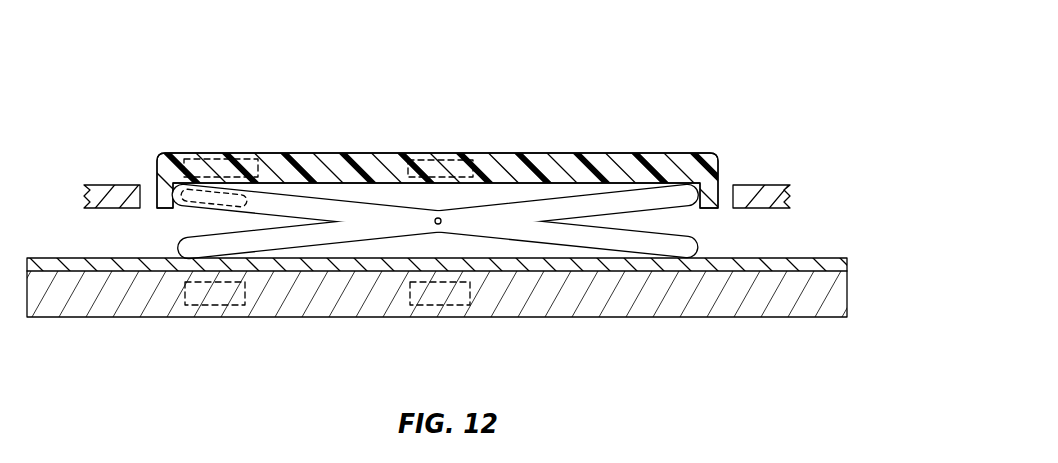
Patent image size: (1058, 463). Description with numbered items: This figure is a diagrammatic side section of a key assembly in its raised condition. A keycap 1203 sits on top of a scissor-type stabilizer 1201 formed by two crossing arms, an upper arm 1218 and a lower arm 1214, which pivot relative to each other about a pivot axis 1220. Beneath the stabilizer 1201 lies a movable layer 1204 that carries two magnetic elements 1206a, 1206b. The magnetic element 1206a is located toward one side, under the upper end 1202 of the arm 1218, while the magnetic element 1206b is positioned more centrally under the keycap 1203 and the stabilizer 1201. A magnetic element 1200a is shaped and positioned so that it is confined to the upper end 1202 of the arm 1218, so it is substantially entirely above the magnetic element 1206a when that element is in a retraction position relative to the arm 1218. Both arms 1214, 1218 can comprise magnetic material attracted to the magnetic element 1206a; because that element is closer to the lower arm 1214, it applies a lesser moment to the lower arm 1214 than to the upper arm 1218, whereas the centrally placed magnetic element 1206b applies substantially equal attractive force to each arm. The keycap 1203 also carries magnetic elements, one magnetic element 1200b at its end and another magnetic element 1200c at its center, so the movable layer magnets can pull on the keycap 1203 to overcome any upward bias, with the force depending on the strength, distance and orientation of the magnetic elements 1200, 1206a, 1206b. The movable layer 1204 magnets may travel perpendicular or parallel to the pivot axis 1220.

The magnetic elements 1200 is at (673, 72).
The magnetic element 1200a is at (268, 158).
The magnetic element 1200b is at (203, 157).
The magnetic element 1200c is at (462, 158).
The stabilizer 1201 is at (480, 205).
The upper end 1202 is at (178, 188).
The keycap 1203 is at (709, 157).
The movable layer 1204 is at (76, 310).
The magnetic element 1206a is at (218, 308).
The magnetic element 1206b is at (440, 306).
The lower arm 1214 is at (590, 202).
The upper arm 1218 is at (318, 207).
The pivot axis 1220 is at (434, 219).